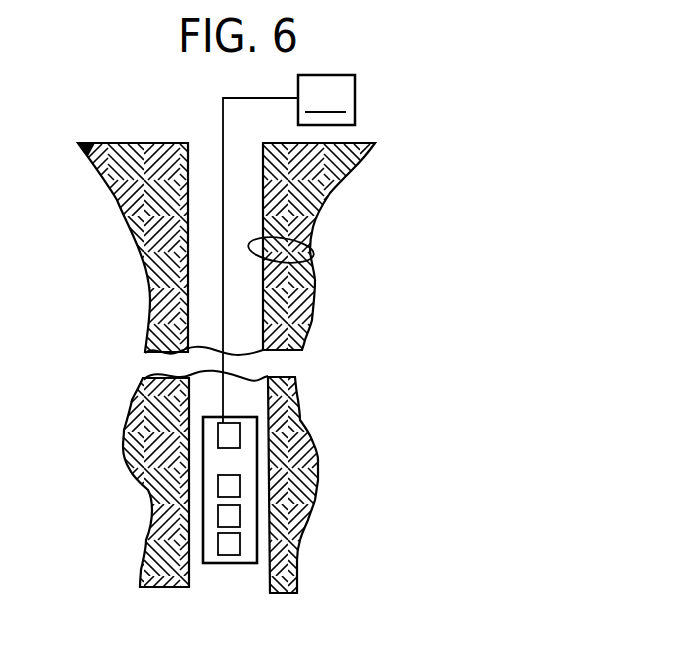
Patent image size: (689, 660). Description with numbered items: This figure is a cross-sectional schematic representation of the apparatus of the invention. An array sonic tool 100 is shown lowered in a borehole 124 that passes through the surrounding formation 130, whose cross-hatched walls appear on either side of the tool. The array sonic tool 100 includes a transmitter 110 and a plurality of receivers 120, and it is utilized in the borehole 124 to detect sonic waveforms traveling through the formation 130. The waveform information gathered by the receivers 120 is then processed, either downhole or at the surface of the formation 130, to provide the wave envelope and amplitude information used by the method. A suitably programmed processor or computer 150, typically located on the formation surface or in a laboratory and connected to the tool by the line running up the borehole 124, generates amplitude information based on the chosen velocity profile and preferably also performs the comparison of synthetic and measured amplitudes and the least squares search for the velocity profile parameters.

The array sonic tool 100 is at (270, 463).
The transmitter 110 is at (241, 431).
The receivers 120 is at (240, 487).
The borehole 124 is at (312, 262).
The formation 130 is at (375, 143).
The processor or computer 150 is at (289, 249).